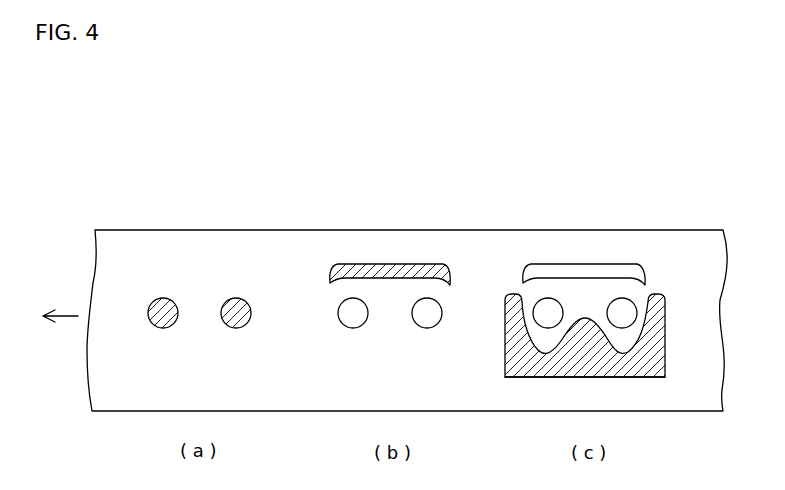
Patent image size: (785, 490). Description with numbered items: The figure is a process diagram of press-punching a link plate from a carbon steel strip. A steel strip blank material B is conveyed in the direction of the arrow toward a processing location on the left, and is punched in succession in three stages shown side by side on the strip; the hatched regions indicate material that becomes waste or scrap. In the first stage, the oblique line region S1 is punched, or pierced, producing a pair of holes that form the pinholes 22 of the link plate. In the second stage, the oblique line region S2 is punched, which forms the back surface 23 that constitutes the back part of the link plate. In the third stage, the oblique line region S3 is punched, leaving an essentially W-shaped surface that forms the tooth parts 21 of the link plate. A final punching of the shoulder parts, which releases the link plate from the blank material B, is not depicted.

The steel strip blank material B is at (293, 230).
The oblique line region S1 is at (160, 322).
The oblique line region S2 is at (437, 264).
The pinholes 22 is at (357, 323).
The back surface 23 is at (614, 265).
The tooth parts 21 is at (545, 350).
The oblique line region S3 is at (582, 378).